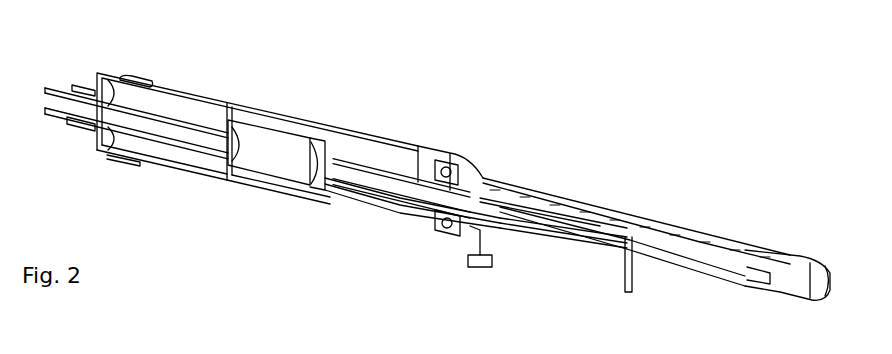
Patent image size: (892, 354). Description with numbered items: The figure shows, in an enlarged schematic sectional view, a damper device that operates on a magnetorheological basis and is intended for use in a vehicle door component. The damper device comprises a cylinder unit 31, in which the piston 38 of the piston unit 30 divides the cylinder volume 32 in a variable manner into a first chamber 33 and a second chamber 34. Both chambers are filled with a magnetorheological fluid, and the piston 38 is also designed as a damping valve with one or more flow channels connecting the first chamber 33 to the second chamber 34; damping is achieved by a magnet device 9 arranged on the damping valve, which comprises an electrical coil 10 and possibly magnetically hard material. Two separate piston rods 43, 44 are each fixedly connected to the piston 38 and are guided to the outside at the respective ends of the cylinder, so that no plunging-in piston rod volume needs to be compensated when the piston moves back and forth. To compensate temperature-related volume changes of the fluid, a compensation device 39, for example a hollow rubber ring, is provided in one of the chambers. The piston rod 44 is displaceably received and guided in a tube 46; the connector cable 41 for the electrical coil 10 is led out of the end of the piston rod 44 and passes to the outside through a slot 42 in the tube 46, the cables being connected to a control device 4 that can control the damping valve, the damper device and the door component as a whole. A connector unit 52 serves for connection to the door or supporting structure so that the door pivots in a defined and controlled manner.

The control device 4 is at (480, 267).
The magnet device 9 is at (262, 162).
The electrical coil 10 is at (315, 186).
The piston unit 30 is at (283, 108).
The cylinder unit 31 is at (355, 130).
The cylinder volume 32 is at (128, 80).
The first chamber 33 is at (178, 153).
The second chamber 34 is at (393, 200).
The piston 38 is at (242, 115).
The compensation device 39 is at (445, 220).
The connector cable 41 is at (633, 286).
The connector cable / slot 42 is at (556, 238).
The piston rod 43 is at (57, 88).
The piston rod 44 is at (393, 172).
The tube 46 is at (665, 222).
The connector unit 52 is at (782, 252).